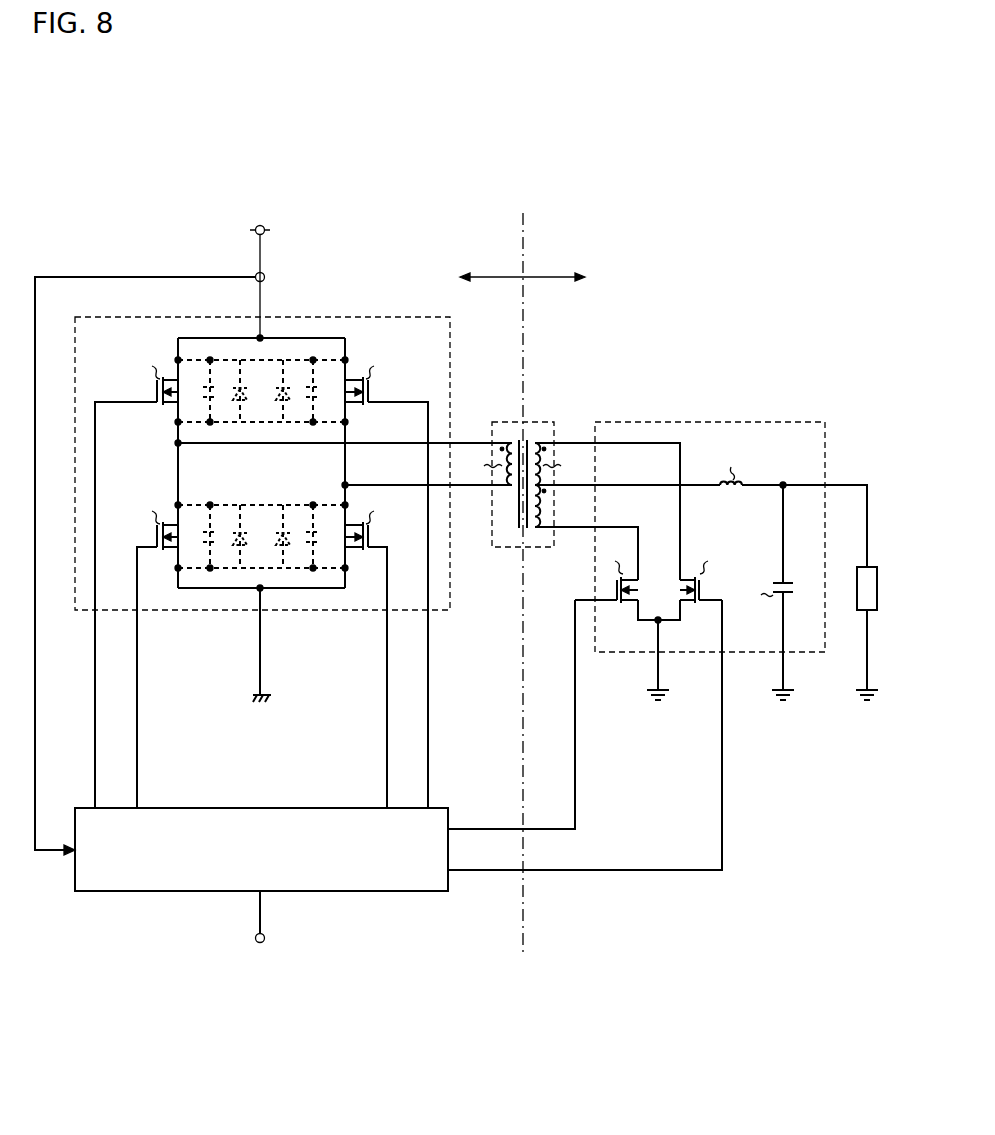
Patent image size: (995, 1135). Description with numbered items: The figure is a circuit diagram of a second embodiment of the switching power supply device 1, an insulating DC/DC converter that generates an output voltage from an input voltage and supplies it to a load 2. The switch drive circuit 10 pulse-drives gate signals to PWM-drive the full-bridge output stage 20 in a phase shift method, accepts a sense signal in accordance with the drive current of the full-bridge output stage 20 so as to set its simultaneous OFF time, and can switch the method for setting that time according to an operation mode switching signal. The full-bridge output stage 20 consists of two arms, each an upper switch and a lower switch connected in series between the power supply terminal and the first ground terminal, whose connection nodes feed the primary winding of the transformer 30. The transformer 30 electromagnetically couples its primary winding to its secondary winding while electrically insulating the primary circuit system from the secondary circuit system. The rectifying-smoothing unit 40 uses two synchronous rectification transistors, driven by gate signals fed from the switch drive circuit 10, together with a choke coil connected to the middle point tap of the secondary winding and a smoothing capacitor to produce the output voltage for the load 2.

The switching power supply device 1 is at (785, 307).
The load 2 is at (878, 594).
The switch drive circuit 10 is at (263, 808).
The full-bridge output stage 20 is at (344, 319).
The transformer 30 is at (539, 421).
The rectifying-smoothing unit 40 is at (710, 421).